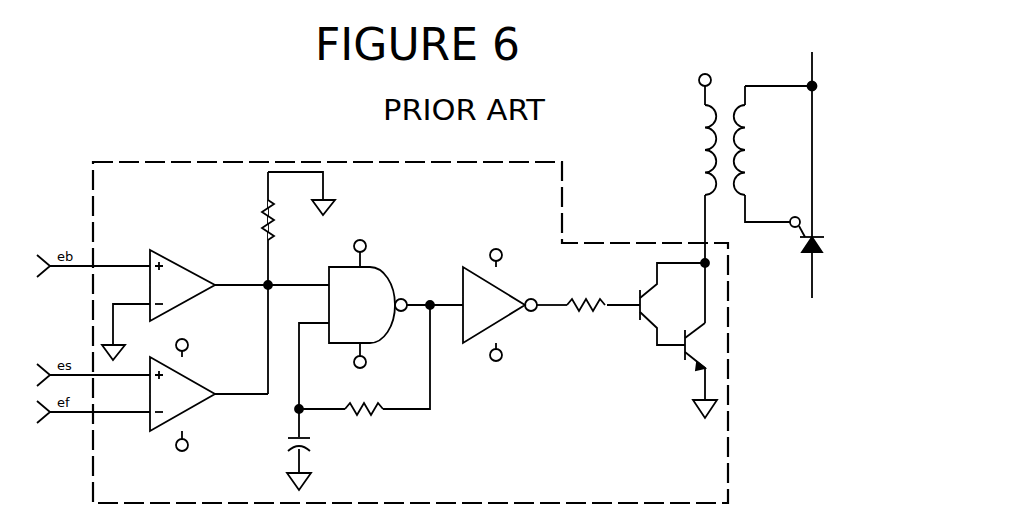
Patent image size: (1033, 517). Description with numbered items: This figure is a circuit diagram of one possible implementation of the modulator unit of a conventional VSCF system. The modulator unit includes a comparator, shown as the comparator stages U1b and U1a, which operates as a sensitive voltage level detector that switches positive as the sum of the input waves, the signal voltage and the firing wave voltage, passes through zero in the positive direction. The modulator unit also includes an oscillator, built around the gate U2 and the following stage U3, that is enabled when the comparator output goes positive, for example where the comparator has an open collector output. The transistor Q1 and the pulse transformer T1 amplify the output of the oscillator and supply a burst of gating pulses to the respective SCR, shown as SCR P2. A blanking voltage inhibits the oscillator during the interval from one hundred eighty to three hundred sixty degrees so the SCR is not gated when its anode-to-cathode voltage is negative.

The comparator LM139 U1b is at (185, 304).
The comparator LM139 U1a is at (209, 395).
The NAND gate 4093 oscillator U2 is at (375, 370).
The inverter/driver 4049 U3 is at (515, 307).
The transistor Q1 is at (642, 340).
The pulse transformer T1 is at (741, 189).
The SCR P2 is at (843, 175).